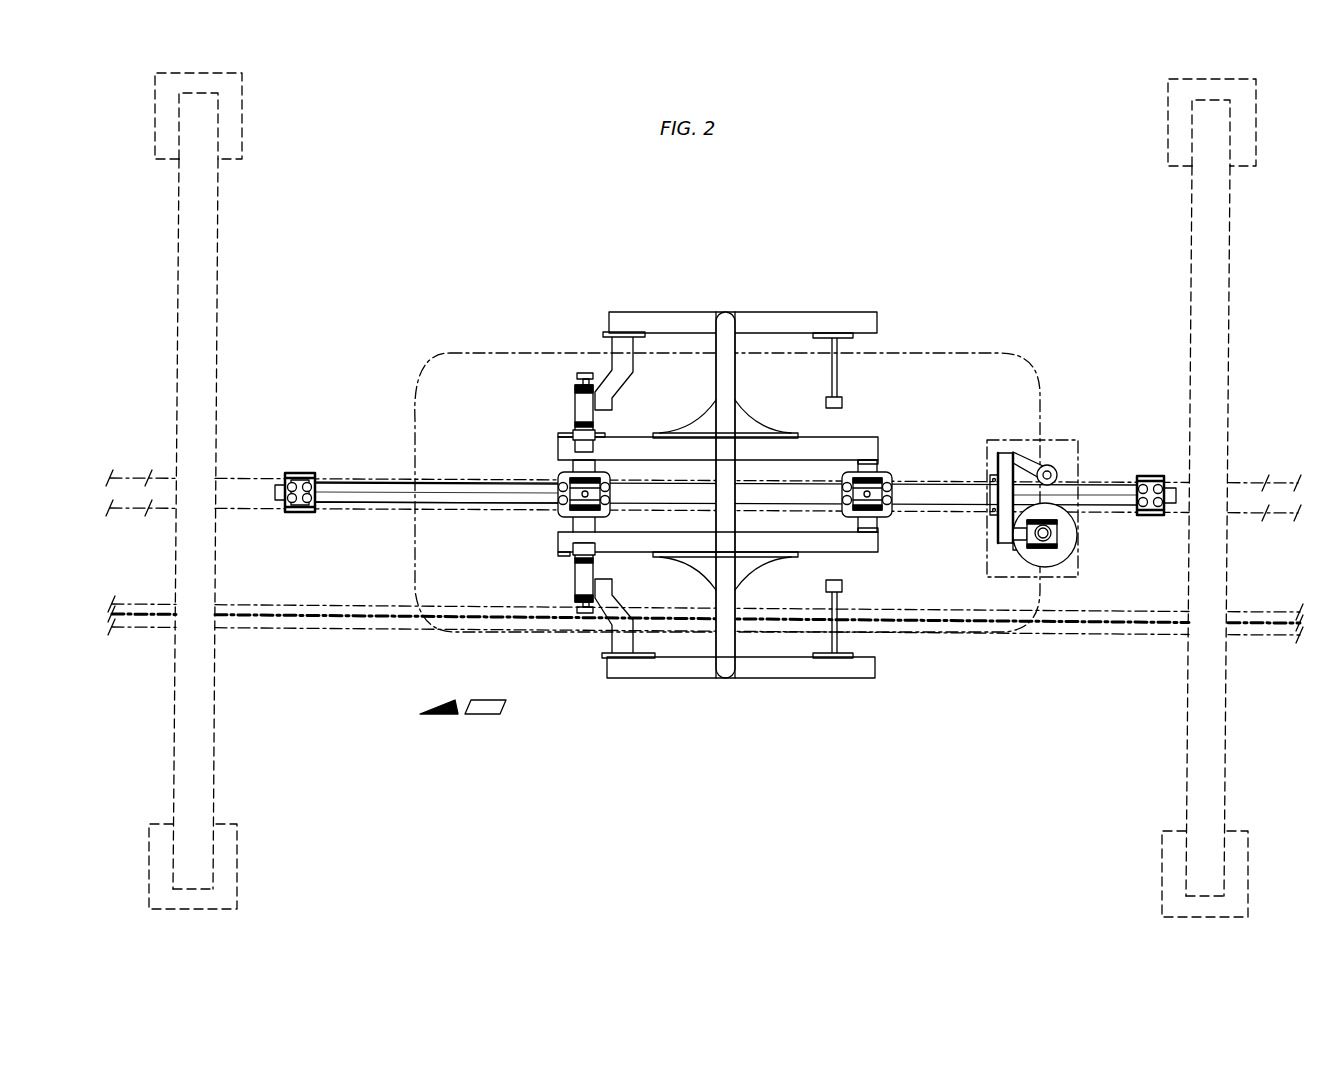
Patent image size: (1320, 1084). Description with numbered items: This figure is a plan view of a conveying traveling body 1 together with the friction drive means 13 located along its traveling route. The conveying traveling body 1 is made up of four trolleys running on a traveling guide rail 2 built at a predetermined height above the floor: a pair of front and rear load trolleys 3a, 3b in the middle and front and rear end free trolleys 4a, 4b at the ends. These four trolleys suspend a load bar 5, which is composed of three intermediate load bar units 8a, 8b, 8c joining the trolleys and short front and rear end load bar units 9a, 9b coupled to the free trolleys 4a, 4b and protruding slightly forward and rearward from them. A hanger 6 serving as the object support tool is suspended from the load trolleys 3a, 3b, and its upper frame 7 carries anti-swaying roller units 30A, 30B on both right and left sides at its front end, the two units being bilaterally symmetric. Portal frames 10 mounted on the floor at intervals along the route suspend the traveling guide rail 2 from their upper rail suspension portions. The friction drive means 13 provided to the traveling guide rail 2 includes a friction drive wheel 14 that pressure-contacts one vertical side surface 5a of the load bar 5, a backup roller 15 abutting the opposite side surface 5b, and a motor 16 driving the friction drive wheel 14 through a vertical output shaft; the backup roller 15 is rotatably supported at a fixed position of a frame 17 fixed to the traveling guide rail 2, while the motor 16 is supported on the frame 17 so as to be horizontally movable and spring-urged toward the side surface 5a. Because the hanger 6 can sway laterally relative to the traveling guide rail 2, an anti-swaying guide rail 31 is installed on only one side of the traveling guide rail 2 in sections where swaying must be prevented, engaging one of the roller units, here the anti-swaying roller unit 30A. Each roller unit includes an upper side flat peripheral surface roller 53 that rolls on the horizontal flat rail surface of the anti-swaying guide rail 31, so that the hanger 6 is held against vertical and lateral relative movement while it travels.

The conveying traveling body 1 is at (900, 475).
The traveling guide rail 2 is at (145, 520).
The load trolley 3a is at (556, 507).
The load trolley 3b is at (900, 518).
The free trolley 4a is at (298, 472).
The free trolley 4b is at (1148, 476).
The load bar 5 is at (471, 482).
The side surface 5a is at (456, 504).
The side surface 5b is at (438, 482).
The hanger 6 is at (795, 311).
The upper frame 7 is at (838, 447).
The intermediate load bar unit 8a is at (677, 497).
The intermediate load bar unit 8b is at (383, 496).
The intermediate load bar unit 8c is at (1103, 502).
The front end load bar unit 9a is at (279, 484).
The rear end load bar unit 9b is at (1170, 505).
The portal frame 10 is at (205, 652).
The friction drive means 13 is at (1054, 440).
The friction drive wheel 14 is at (1073, 540).
The backup roller 15 is at (1056, 468).
The motor 16 is at (1048, 552).
The frame 17 is at (1005, 452).
The anti-swaying roller unit 30A is at (583, 615).
The anti-swaying roller unit 30B is at (583, 372).
The anti-swaying guide rail 31 is at (150, 634).
The upper side flat peripheral surface roller 53 is at (577, 375).